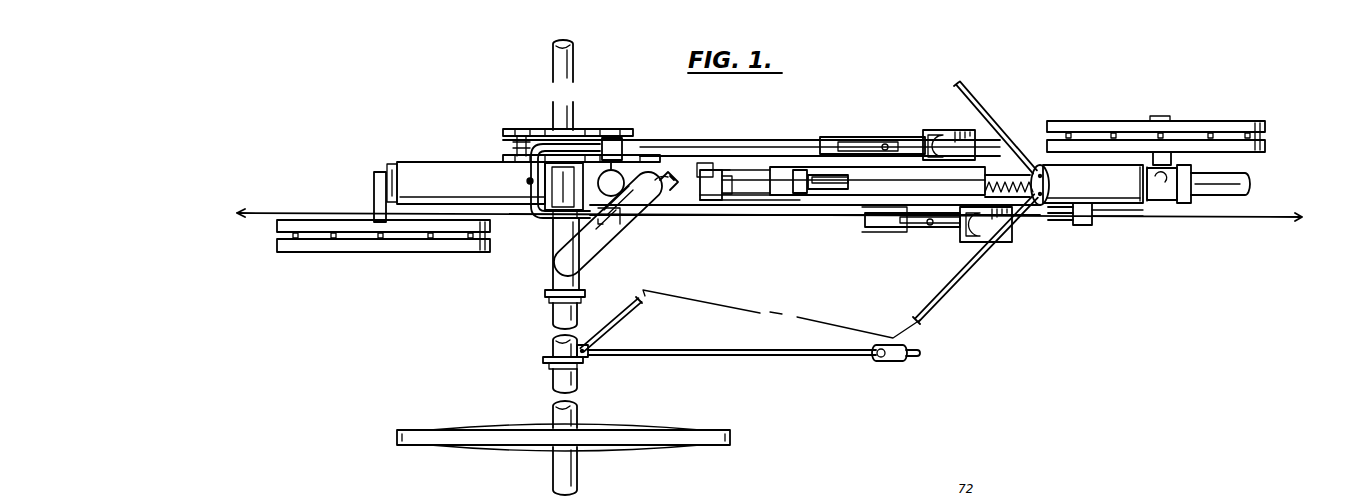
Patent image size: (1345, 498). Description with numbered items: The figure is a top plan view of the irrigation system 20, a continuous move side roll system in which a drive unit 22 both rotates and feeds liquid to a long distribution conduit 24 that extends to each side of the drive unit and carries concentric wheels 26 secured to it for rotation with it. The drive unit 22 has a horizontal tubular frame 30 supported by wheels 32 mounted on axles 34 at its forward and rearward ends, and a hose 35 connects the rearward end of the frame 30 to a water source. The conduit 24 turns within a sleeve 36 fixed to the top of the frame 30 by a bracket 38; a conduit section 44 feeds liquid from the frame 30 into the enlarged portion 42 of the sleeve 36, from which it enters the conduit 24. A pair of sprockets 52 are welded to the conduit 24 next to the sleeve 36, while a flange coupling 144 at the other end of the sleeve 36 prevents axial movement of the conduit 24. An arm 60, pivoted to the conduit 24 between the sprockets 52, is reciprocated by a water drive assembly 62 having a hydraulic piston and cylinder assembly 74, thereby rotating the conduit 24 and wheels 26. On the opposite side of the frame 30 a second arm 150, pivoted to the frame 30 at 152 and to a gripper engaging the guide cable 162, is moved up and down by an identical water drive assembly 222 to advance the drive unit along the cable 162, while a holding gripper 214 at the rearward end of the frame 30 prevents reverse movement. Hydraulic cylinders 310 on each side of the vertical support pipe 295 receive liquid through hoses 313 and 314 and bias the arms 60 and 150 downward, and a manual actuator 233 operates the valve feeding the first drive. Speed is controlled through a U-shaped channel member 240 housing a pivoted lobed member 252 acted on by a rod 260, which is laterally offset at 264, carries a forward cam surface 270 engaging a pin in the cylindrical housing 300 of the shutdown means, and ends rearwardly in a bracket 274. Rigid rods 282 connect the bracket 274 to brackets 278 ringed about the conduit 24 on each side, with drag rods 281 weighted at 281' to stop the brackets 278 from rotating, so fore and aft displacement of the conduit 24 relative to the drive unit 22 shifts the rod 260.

The irrigation system 20 is at (278, 125).
The drive unit 22 is at (765, 125).
The distribution conduit 24 is at (576, 54).
The wheels 26 is at (440, 442).
The tubular frame 30 is at (405, 162).
The wheels 32 is at (308, 250).
The axles 34 is at (373, 193).
The hose 35 is at (1247, 182).
The sleeve 36 is at (578, 338).
The bracket 38 is at (551, 192).
The enlarged portion 42 is at (552, 280).
The conduit section 44 is at (585, 258).
The sprockets 52 is at (510, 150).
The arm 60 is at (680, 140).
The water drive assembly 62 is at (901, 127).
The hydraulic piston and cylinder assembly 74 is at (935, 122).
The flange coupling 144 is at (545, 297).
The arm 150 is at (772, 230).
The pivot 152 is at (645, 235).
The guide cable 162 is at (262, 210).
The gripper 214 is at (1055, 237).
The water drive assembly 222 is at (949, 246).
The actuator 233 is at (718, 184).
The channel member 240 is at (885, 197).
The member 252 is at (840, 206).
The rod 260 is at (1000, 175).
The lateral offset 264 is at (800, 170).
The cam surface 270 is at (718, 172).
The bracket 274 is at (1050, 186).
The brackets 278 is at (585, 358).
The drag rods 281 is at (732, 371).
The weight 281' is at (896, 373).
The rigid rods 282 is at (640, 315).
The support pipe 295 is at (622, 176).
The cylindrical housing 300 is at (742, 200).
The hydraulic cylinders 310 is at (615, 136).
The hose 313 is at (530, 140).
The hose 314 is at (540, 222).